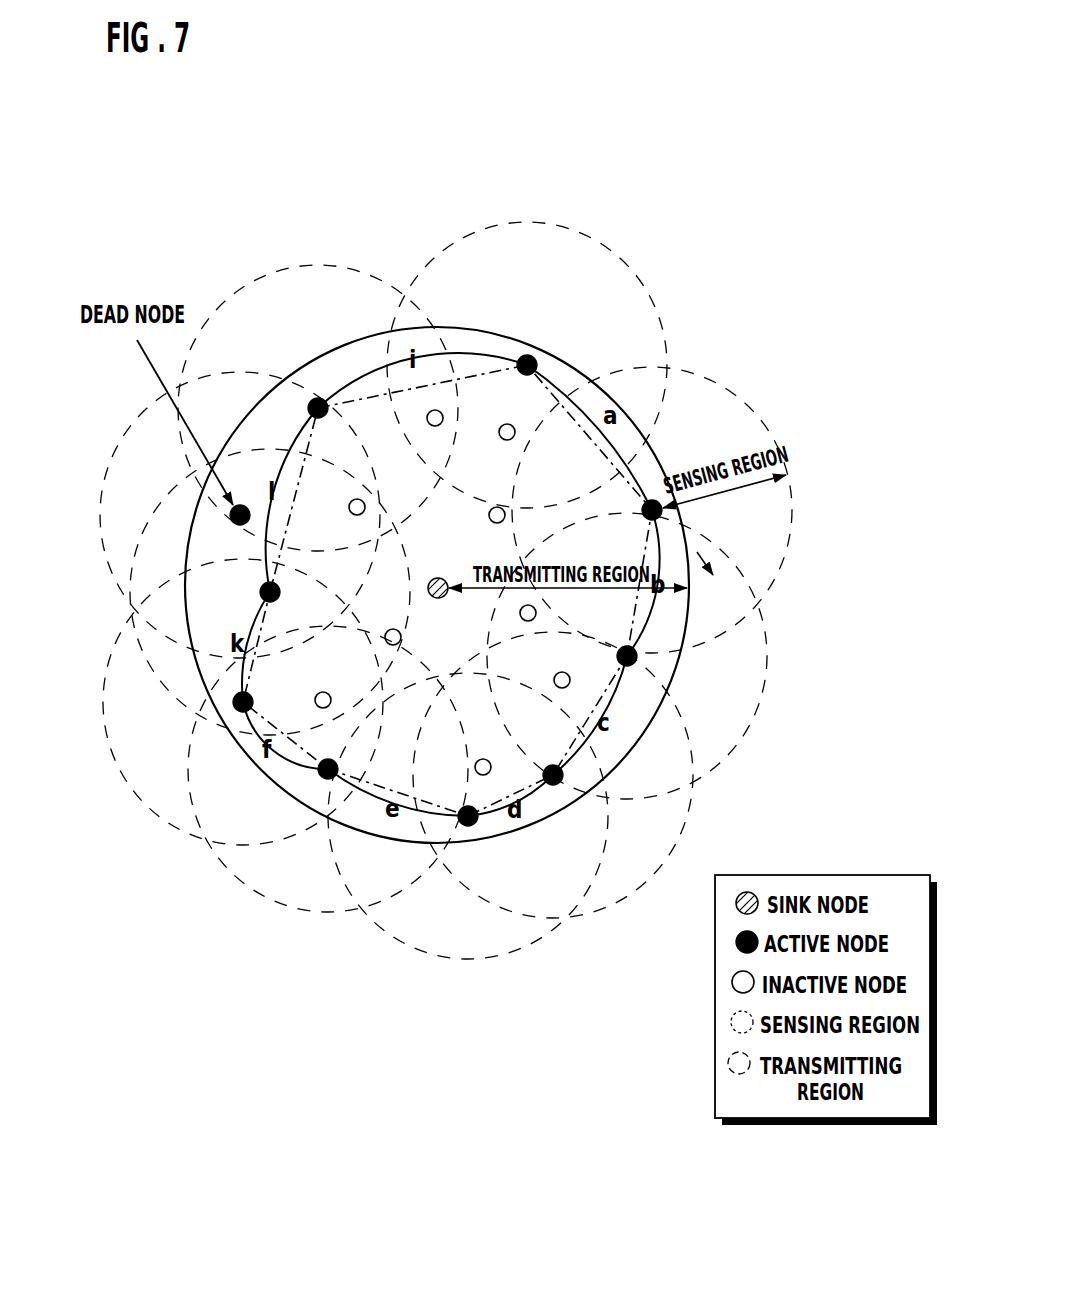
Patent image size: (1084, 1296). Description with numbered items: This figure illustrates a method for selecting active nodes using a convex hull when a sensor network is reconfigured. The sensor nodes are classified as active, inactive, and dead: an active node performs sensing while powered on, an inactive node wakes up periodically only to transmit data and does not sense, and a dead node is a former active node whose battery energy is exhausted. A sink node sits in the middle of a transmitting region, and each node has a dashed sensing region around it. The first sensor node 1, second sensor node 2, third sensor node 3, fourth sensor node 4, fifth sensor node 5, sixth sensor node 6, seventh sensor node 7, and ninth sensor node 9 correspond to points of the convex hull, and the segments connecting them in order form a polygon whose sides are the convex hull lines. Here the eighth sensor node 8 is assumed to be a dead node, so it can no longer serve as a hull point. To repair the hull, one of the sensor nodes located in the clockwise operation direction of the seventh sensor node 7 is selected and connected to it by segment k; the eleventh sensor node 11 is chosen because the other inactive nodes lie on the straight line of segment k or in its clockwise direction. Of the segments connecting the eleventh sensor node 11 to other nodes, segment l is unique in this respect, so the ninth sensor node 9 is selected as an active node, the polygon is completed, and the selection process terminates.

The first sensor node 1 is at (528, 360).
The second sensor node 2 is at (652, 506).
The third sensor node 3 is at (635, 657).
The fourth sensor node 4 is at (553, 780).
The fifth sensor node 5 is at (466, 822).
The sixth sensor node 6 is at (323, 770).
The seventh sensor node 7 is at (238, 700).
The eighth sensor node 8 is at (236, 513).
The ninth sensor node 9 is at (315, 402).
The eleventh sensor node 11 is at (264, 592).